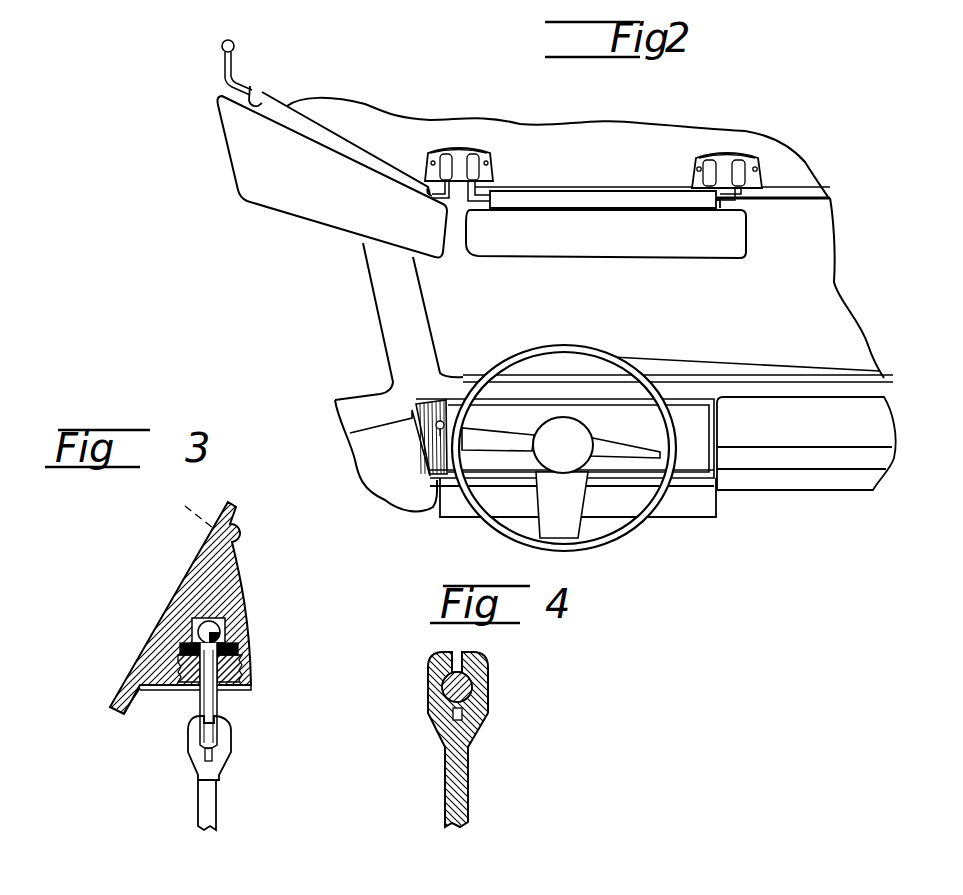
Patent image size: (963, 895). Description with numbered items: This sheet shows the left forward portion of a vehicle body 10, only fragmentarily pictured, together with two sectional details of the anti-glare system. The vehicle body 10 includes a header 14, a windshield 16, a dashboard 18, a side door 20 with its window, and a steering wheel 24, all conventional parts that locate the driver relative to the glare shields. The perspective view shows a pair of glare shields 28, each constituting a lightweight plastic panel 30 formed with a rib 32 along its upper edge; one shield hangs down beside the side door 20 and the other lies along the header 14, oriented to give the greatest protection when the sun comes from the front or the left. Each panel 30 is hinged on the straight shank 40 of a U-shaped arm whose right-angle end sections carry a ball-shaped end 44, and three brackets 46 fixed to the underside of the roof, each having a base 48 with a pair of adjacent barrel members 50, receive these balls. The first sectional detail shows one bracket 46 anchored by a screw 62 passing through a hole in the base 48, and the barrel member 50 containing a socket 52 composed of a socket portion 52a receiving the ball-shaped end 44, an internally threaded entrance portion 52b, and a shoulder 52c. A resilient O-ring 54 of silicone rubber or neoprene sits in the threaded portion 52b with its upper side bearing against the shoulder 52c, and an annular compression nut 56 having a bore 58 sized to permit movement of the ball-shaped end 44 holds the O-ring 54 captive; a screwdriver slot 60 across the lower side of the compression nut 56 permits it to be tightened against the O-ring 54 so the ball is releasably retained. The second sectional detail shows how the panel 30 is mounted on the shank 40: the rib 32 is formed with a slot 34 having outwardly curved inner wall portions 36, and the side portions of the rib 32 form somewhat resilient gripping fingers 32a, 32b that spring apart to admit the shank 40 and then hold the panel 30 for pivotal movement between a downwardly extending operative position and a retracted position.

In FIG. 2, the vehicle body 10 is at (312, 370).
In FIG. 2, the header 14 is at (803, 193).
In FIG. 2, the windshield 16 is at (770, 335).
In FIG. 2, the dashboard 18 is at (777, 436).
In FIG. 2, the side door 20 is at (398, 485).
In FIG. 2, the steering wheel 24 is at (632, 532).
In FIG. 3, the glare shield 28 is at (192, 775).
In FIG. 4, the glare shield 28 is at (461, 726).
In FIG. 3, the panel 30 is at (196, 818).
In FIG. 4, the panel 30 is at (470, 800).
In FIG. 4, the rib 32 is at (461, 726).
In FIG. 4, the gripping finger 32a is at (490, 700).
In FIG. 4, the gripping finger 32b is at (447, 662).
In FIG. 3, the slot 34 is at (214, 755).
In FIG. 4, the slot 34 is at (462, 650).
In FIG. 4, the curved inner wall portion 36 is at (447, 683).
In FIG. 4, the shank 40 is at (430, 705).
In FIG. 2, the ball-shaped end 44 is at (234, 44).
In FIG. 3, the ball-shaped end 44 is at (198, 631).
In FIG. 3, the bracket 46 is at (190, 627).
In FIG. 2, the base 48 is at (760, 157).
In FIG. 3, the base 48 is at (118, 712).
In FIG. 3, the barrel member 50 is at (235, 580).
In FIG. 3, the socket 52 is at (213, 617).
In FIG. 3, the socket portion 52a is at (226, 618).
In FIG. 3, the threaded entrance portion 52b is at (240, 666).
In FIG. 3, the shoulder 52c is at (240, 644).
In FIG. 3, the O-ring 54 is at (180, 650).
In FIG. 3, the compression nut 56 is at (245, 689).
In FIG. 3, the bore 58 is at (218, 700).
In FIG. 3, the screwdriver slot 60 is at (185, 688).
In FIG. 2, the screw 62 is at (698, 165).
In FIG. 3, the screw 62 is at (238, 533).